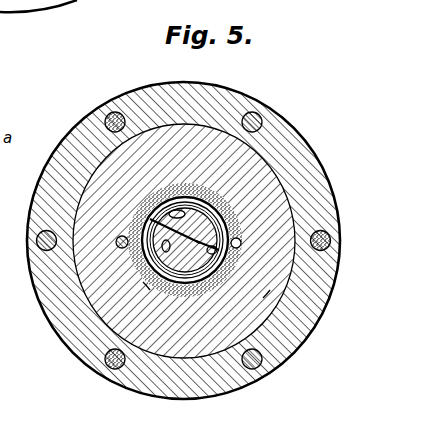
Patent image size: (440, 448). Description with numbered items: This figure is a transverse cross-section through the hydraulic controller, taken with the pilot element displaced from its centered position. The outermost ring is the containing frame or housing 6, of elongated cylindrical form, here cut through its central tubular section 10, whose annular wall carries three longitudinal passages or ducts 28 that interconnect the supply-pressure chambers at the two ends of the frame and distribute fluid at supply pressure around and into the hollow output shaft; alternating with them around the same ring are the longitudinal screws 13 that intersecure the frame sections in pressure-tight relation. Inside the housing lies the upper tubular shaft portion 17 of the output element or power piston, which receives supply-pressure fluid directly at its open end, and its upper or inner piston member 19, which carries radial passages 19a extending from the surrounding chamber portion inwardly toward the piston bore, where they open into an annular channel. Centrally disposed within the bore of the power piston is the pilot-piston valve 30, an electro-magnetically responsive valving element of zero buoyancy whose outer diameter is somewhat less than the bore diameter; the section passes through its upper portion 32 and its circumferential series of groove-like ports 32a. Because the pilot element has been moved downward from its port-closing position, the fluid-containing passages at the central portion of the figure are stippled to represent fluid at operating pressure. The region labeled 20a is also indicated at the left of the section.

The frame or housing 6 is at (321, 133).
The central tubular section 10 is at (312, 170).
The longitudinal screws 13 is at (38, 232).
The upper tubular shaft portion 17 is at (232, 263).
The upper piston member 19 is at (263, 298).
The radial passages 19a is at (143, 282).
The port 20a is at (116, 246).
The longitudinal passages 28 is at (105, 114).
The pilot-piston valve 30 is at (189, 188).
The upper portion of pilot piston valve 32 is at (181, 292).
The ports 32a is at (150, 211).